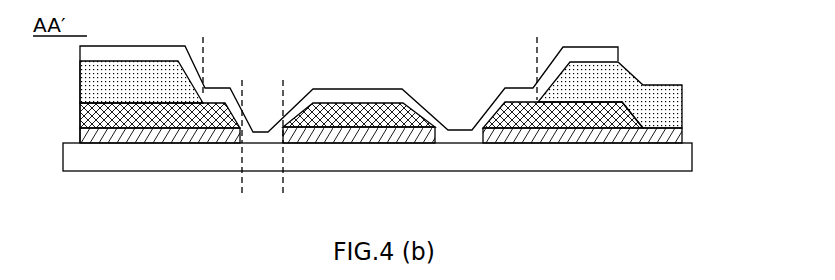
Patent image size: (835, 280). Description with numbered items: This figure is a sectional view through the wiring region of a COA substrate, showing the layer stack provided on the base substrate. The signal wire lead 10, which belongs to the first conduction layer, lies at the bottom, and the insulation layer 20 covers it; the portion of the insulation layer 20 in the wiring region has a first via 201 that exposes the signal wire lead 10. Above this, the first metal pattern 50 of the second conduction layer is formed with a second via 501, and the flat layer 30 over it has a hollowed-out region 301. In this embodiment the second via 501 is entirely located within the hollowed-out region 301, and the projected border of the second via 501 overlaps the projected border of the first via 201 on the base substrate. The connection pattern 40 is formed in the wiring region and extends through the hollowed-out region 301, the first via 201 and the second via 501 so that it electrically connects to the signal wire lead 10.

The signal wire lead 10 is at (635, 163).
The insulation layer 20 is at (620, 138).
The flat layer 30 is at (602, 93).
The connection pattern 40 is at (595, 53).
The first metal pattern 50 is at (618, 117).
The first via 201 is at (242, 186).
The hollowed-out region 301 is at (537, 55).
The second via 501 is at (283, 85).